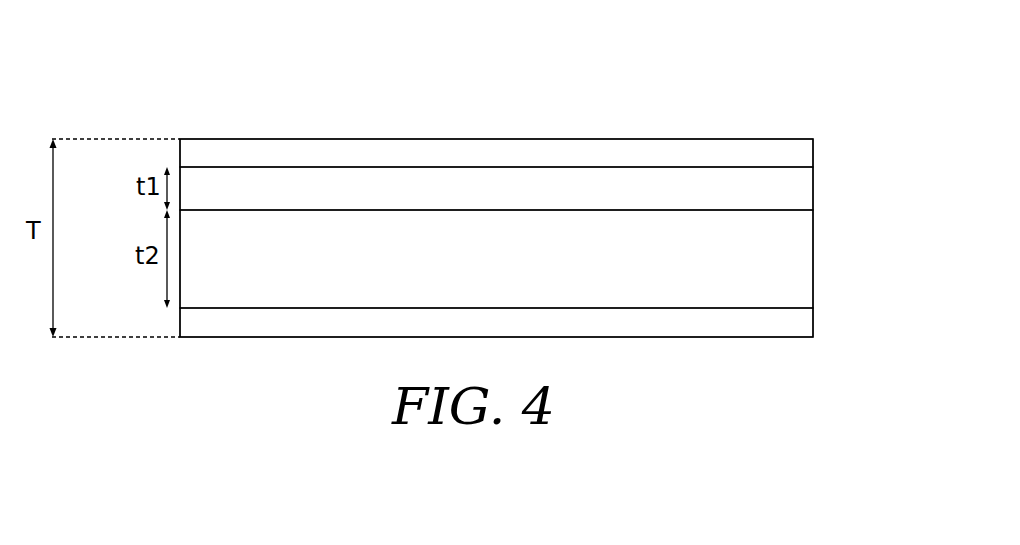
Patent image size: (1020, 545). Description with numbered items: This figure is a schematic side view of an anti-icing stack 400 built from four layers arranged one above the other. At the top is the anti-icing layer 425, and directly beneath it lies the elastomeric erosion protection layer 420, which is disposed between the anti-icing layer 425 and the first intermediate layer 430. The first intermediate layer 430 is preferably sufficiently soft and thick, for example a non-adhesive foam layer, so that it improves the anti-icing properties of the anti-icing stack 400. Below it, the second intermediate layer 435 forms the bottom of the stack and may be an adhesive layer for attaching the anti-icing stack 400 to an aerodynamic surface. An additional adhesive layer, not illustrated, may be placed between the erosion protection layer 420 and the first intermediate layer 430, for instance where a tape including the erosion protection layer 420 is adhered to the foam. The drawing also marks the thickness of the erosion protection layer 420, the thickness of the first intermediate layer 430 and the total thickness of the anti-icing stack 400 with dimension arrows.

The anti-icing stack 400 is at (182, 77).
The anti-icing layer 425 is at (756, 148).
The elastomeric erosion protection layer 420 is at (793, 187).
The first intermediate layer 430 is at (793, 254).
The second intermediate layer 435 is at (793, 323).